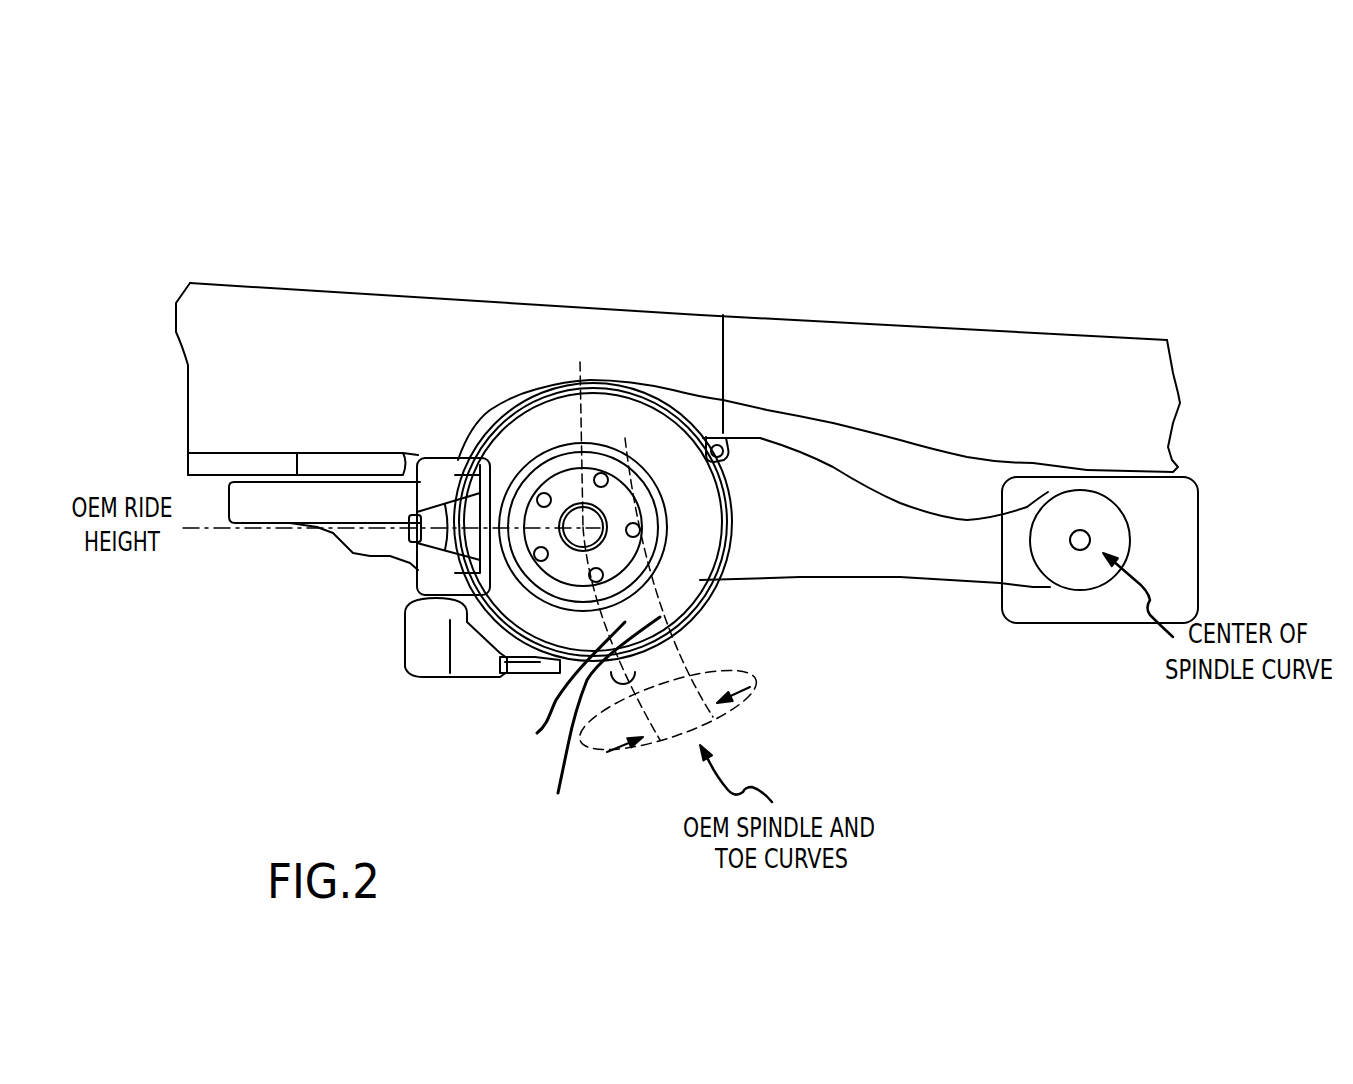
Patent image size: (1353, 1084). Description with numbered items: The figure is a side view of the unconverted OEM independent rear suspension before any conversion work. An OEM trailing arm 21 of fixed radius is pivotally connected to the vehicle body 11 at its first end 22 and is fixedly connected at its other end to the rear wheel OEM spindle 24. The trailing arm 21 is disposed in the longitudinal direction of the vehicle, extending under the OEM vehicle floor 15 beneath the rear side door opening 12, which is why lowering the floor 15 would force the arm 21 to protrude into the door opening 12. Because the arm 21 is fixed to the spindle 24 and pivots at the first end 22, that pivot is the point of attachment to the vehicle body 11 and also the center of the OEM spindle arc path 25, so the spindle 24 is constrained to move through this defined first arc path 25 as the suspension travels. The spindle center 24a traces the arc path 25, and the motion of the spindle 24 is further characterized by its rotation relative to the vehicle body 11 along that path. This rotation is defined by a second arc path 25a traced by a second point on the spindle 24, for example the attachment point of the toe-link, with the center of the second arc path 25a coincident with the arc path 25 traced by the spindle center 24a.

The vehicle body 11 is at (976, 657).
The rear side door opening 12 is at (768, 210).
The OEM vehicle floor 15 is at (1152, 368).
The OEM trailing arm 21 is at (808, 612).
The first end 22 is at (1063, 568).
The OEM spindle 24 is at (510, 597).
The spindle center 24a is at (590, 533).
The OEM spindle arc path 25 is at (609, 598).
The second arc path 25a is at (598, 724).